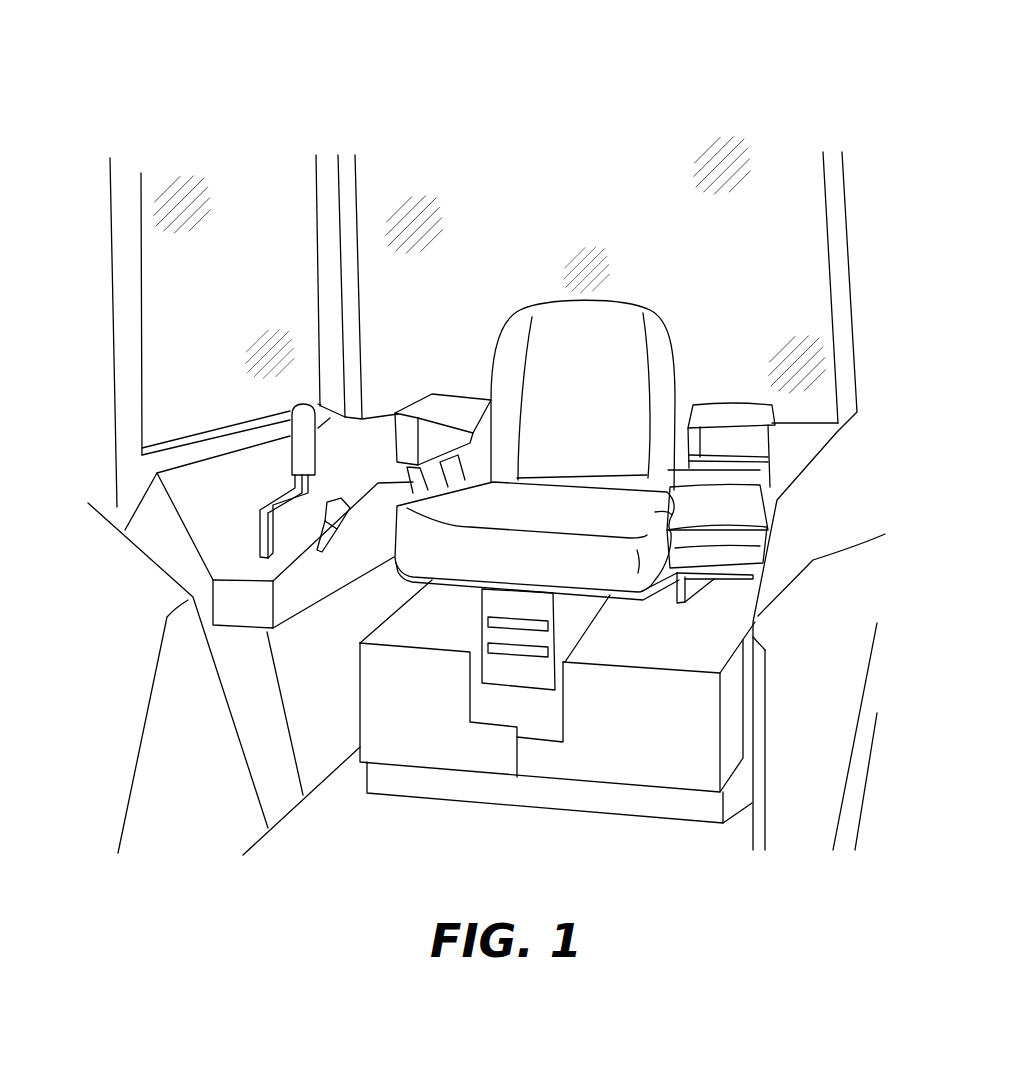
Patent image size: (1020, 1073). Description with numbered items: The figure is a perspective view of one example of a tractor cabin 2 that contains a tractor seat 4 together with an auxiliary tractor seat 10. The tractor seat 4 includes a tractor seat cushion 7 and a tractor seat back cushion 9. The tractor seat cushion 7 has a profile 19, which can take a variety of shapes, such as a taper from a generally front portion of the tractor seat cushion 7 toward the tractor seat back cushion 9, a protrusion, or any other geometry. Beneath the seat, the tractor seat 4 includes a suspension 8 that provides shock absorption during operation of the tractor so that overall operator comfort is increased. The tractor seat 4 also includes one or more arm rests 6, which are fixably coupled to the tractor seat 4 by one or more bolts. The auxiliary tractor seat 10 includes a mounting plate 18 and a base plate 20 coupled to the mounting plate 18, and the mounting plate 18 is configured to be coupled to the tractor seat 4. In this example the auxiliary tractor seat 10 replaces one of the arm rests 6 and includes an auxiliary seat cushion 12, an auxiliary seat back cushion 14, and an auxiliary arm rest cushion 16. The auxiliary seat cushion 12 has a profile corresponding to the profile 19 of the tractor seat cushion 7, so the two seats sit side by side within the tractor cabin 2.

The tractor cabin 2 is at (403, 66).
The tractor seat 4 is at (530, 290).
The arm rests 6 is at (440, 397).
The tractor seat cushion 7 is at (490, 518).
The suspension 8 is at (545, 630).
The tractor seat back cushion 9 is at (627, 318).
The auxiliary tractor seat 10 is at (727, 388).
The auxiliary seat cushion 12 is at (742, 558).
The auxiliary seat back cushion 14 is at (758, 470).
The auxiliary arm rest cushion 16 is at (757, 450).
The mounting plate 18 is at (683, 607).
The profile 19 is at (668, 520).
The base plate 20 is at (728, 578).